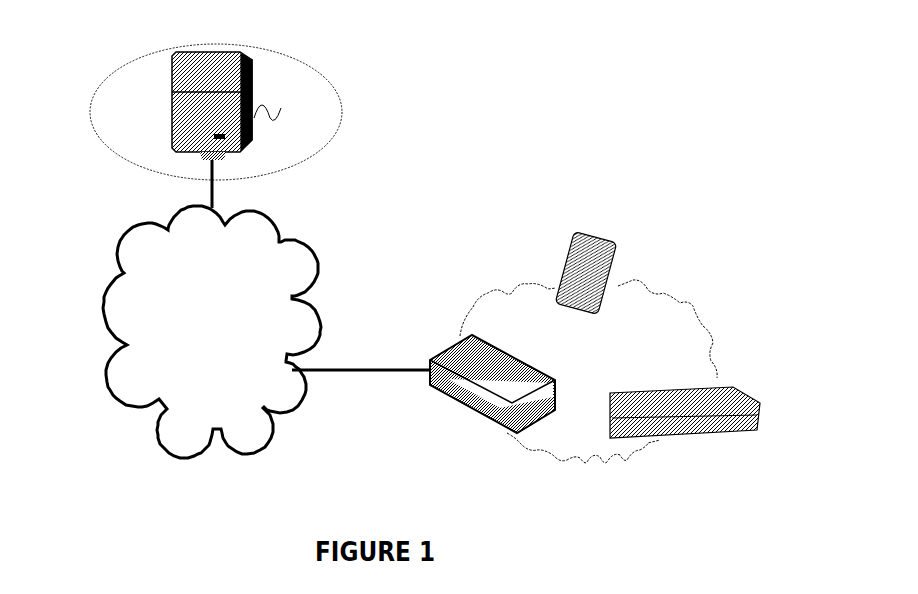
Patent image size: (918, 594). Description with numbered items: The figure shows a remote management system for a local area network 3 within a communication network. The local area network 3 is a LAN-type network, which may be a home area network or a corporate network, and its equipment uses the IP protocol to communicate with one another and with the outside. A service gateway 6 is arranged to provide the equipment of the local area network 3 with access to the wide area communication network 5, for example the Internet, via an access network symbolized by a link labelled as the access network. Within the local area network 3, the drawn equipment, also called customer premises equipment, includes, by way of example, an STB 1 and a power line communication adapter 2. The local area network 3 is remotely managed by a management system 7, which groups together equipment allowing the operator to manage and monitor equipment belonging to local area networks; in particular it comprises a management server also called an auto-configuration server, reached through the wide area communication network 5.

The STB 1 is at (745, 392).
The power line communication adapter 2 is at (618, 258).
The local area network 3 is at (690, 306).
The wide area communication network 5 is at (111, 405).
The service gateway 6 is at (508, 352).
The management system 7 is at (343, 101).